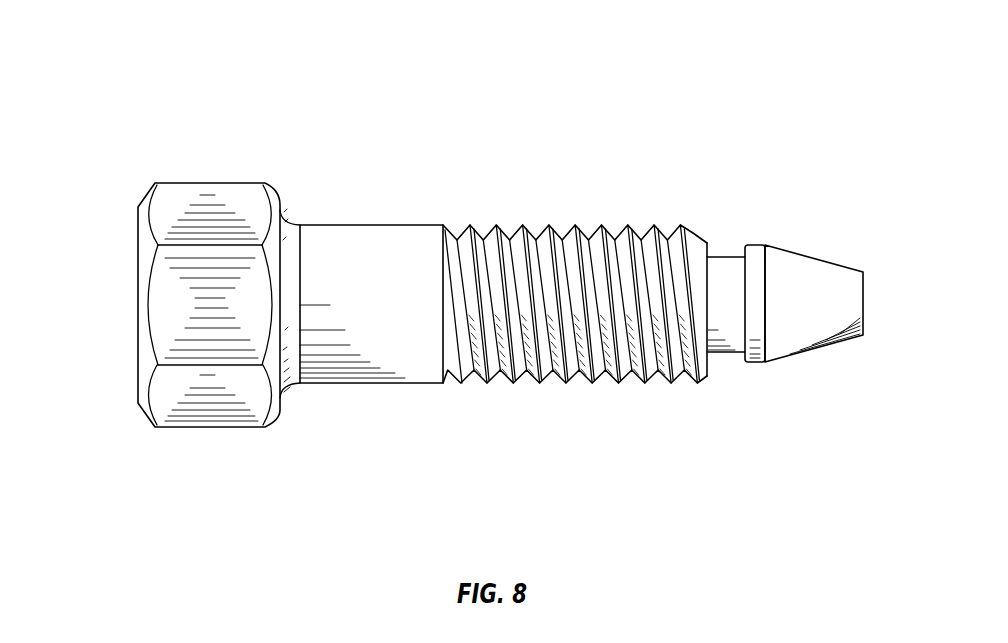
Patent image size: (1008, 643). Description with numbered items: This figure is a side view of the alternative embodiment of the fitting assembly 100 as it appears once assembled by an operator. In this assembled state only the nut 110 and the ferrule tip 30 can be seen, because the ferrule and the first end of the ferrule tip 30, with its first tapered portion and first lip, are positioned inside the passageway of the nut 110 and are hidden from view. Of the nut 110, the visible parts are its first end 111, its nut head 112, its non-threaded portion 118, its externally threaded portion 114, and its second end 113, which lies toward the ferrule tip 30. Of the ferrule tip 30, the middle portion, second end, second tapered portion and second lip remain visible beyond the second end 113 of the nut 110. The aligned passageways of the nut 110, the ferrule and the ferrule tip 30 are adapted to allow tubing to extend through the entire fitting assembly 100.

The fitting assembly 100 is at (280, 56).
The nut 110 is at (394, 176).
The first end 111 is at (138, 148).
The nut head 112 is at (156, 331).
The second end 113 is at (693, 226).
The externally threaded portion 114 is at (593, 384).
The non-threaded portion 118 is at (413, 364).
The ferrule tip 30 is at (816, 245).